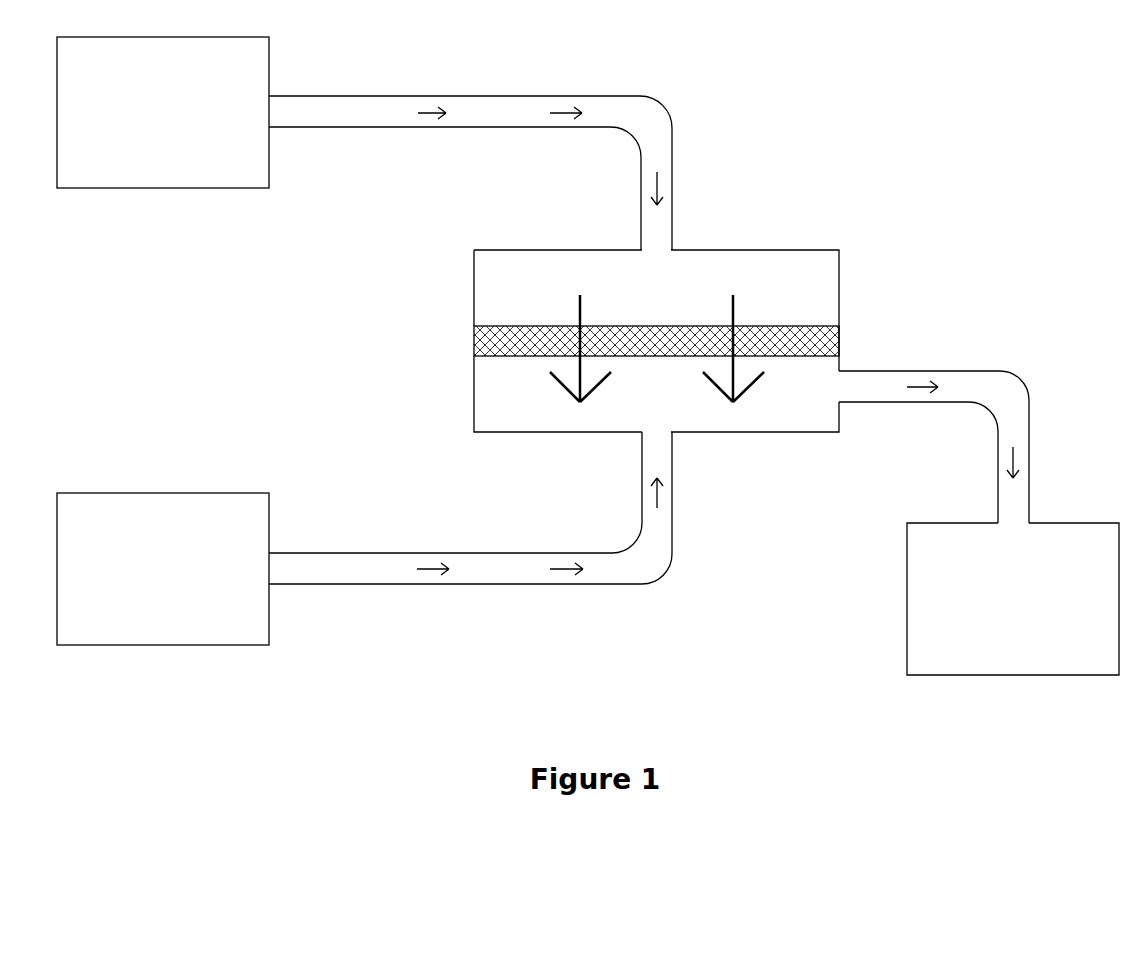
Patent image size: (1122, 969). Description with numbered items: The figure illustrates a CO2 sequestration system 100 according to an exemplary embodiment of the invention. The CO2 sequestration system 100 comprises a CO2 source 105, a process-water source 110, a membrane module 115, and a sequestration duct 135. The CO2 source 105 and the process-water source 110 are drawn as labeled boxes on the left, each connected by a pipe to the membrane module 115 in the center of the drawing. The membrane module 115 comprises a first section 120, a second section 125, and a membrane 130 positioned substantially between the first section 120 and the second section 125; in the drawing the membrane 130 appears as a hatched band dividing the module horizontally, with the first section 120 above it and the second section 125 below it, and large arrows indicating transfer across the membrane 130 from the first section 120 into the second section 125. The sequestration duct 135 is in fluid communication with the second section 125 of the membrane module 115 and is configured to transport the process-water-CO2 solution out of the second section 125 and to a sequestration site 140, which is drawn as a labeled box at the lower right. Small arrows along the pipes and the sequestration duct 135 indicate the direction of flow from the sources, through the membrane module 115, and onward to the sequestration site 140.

The CO2 sequestration system 100 is at (588, 369).
The CO2 source 105 is at (231, 166).
The process-water source 110 is at (232, 508).
The membrane module 115 is at (619, 355).
The first section 120 is at (732, 265).
The second section 125 is at (793, 417).
The membrane 130 is at (490, 342).
The sequestration duct 135 is at (983, 387).
The sequestration site 140 is at (923, 615).